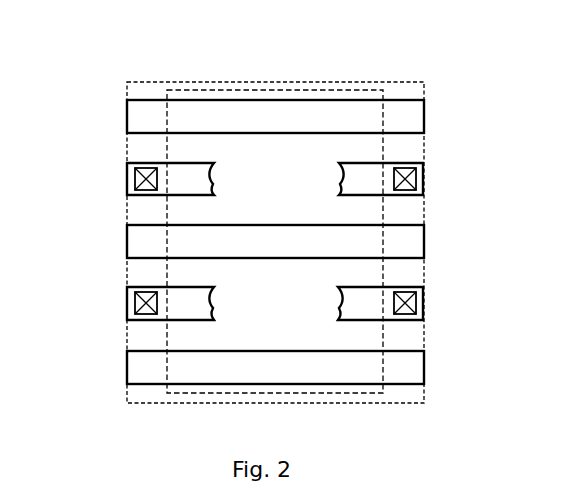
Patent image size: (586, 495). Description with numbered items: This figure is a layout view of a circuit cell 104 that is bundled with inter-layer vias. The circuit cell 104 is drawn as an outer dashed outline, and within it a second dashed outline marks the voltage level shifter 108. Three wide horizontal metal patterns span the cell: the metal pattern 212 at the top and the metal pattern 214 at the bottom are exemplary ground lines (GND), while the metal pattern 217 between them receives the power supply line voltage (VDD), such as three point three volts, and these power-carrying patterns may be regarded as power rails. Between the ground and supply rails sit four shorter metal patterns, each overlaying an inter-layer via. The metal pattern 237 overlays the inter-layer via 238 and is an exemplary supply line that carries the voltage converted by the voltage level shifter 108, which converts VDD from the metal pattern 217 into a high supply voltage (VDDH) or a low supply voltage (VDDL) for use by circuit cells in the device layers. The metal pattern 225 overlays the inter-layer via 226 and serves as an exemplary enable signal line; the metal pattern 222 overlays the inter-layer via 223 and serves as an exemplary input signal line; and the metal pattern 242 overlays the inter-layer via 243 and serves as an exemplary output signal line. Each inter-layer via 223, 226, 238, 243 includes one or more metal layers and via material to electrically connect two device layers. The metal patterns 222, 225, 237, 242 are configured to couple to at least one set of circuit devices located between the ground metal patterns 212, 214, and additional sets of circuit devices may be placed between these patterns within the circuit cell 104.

The circuit cell 104 is at (395, 82).
The voltage level shifter 108 is at (266, 90).
The metal pattern 212 is at (413, 118).
The metal pattern 217 is at (413, 246).
The metal pattern 214 is at (413, 370).
The metal pattern 237 is at (205, 173).
The inter-layer via 238 is at (130, 179).
The metal pattern 225 is at (350, 185).
The inter-layer via 226 is at (413, 178).
The metal pattern 242 is at (205, 299).
The inter-layer via 243 is at (130, 304).
The metal pattern 222 is at (348, 311).
The inter-layer via 223 is at (413, 302).